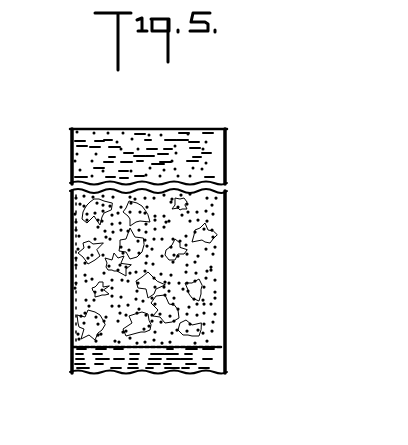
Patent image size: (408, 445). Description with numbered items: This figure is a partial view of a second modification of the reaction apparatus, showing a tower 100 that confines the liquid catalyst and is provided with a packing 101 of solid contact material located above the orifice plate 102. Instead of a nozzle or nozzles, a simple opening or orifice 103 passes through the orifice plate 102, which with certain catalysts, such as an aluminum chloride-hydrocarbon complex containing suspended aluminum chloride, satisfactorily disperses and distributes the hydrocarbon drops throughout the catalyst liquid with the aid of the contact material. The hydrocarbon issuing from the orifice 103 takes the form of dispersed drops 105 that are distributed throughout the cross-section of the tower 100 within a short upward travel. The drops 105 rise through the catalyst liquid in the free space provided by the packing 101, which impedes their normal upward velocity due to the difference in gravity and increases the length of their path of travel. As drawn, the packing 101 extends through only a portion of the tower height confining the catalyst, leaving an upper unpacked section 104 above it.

The tower 100 is at (224, 191).
The packing 101 is at (205, 329).
The orifice plate 102 is at (226, 352).
The orifice 103 is at (147, 350).
The upper unpacked section 104 is at (226, 168).
The dispersed drops 105 is at (77, 166).